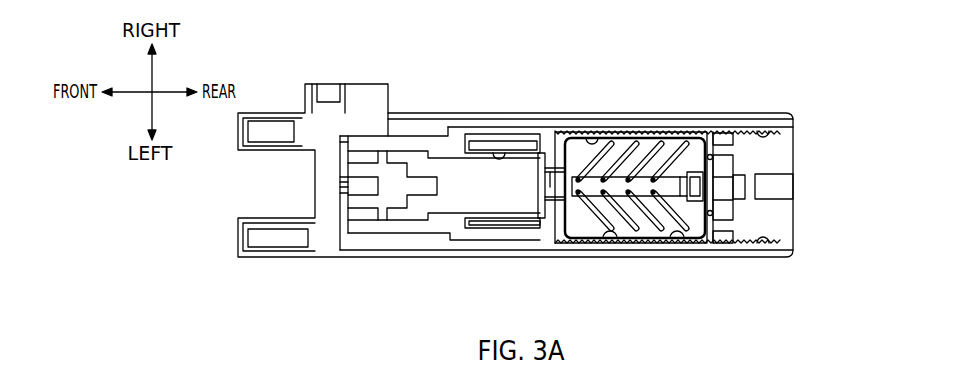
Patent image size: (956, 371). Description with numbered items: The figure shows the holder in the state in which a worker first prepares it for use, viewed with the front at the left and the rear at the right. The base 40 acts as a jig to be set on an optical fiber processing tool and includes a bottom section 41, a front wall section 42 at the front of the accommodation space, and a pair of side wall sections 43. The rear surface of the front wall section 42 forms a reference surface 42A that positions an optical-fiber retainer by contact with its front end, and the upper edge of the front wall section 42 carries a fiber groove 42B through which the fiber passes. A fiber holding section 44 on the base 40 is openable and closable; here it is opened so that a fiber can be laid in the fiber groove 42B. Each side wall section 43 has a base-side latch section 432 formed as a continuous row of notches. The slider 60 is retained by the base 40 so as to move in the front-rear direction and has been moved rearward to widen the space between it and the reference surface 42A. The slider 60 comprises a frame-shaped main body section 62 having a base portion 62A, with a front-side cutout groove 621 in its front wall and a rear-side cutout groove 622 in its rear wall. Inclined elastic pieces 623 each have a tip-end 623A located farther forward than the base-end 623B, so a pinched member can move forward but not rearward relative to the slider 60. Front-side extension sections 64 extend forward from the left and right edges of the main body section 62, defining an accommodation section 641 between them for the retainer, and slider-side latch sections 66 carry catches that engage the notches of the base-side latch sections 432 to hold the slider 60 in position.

The base 40 is at (797, 218).
The bottom section 41 is at (787, 153).
The front wall section 42 is at (321, 234).
The reference surface 42A is at (348, 201).
The fiber groove 42B is at (348, 186).
The side wall section 43 is at (415, 113).
The base-side latch section 432 is at (768, 133).
The fiber holding section 44 is at (327, 92).
The slider 60 is at (755, 168).
The main body section 62 is at (592, 137).
The connector base portion 62A is at (537, 206).
The front-side cutout groove 621 is at (550, 183).
The rear-side cutout groove 622 is at (704, 133).
The elastic piece 623 is at (622, 153).
The tip-end 623A is at (581, 194).
The base-end 623B is at (605, 216).
The front-side extension section 64 is at (501, 152).
The accommodation section 641 is at (470, 182).
The slider-side latch section 66 is at (722, 133).